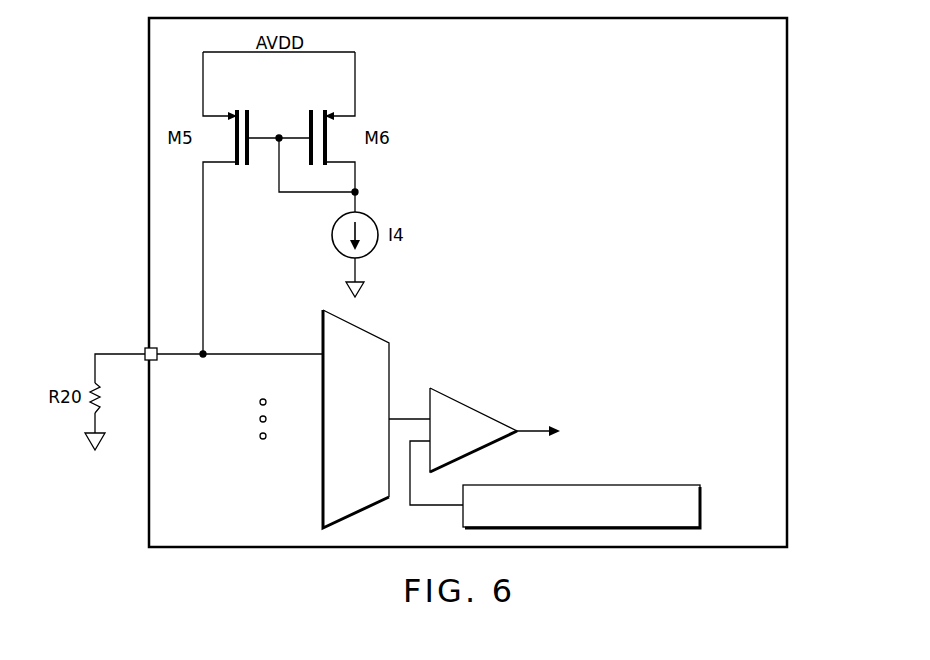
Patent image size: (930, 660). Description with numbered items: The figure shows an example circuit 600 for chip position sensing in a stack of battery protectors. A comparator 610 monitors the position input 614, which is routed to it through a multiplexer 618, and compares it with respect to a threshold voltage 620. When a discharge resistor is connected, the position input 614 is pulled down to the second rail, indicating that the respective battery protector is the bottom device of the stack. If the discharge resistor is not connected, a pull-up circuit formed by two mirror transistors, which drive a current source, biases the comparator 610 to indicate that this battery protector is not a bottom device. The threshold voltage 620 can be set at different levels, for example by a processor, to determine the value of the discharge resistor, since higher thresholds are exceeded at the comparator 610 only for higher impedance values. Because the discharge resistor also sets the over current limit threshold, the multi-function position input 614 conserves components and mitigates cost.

The circuit 600 is at (548, 108).
The comparator 610 is at (477, 405).
The position input 614 is at (168, 372).
The multiplexer 618 is at (322, 474).
The threshold voltage 620 is at (700, 505).